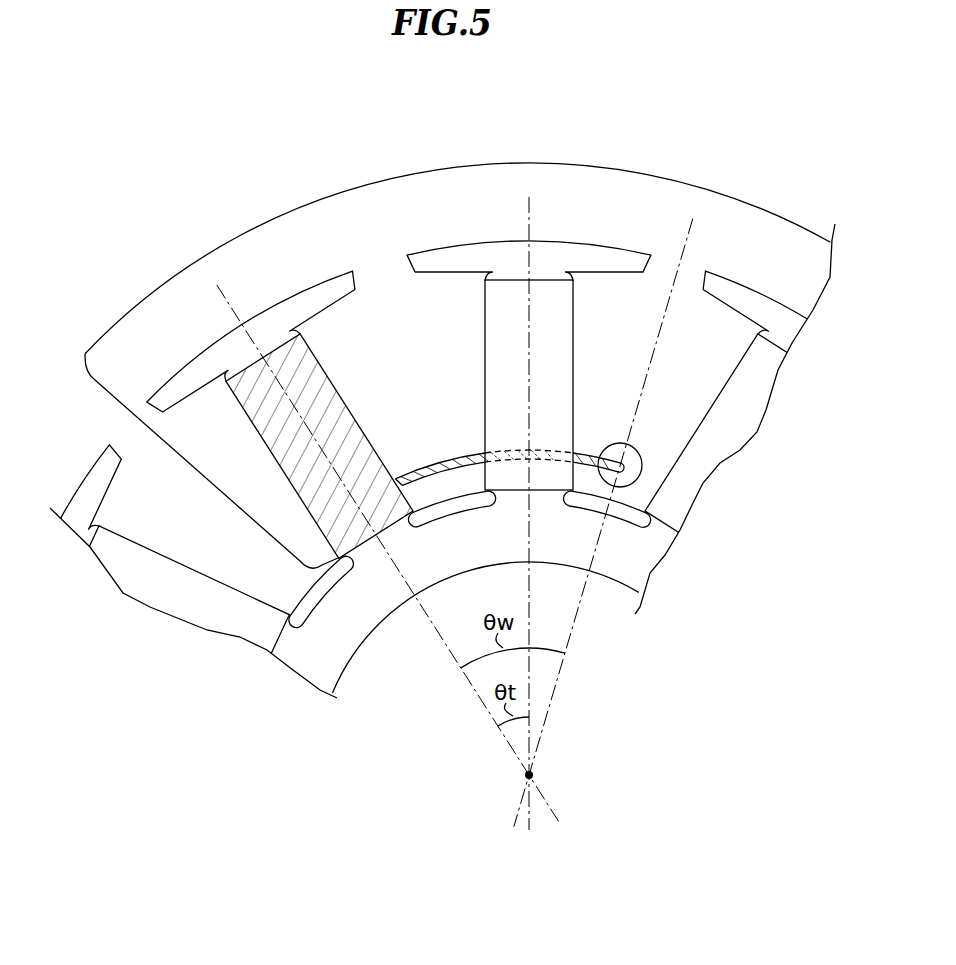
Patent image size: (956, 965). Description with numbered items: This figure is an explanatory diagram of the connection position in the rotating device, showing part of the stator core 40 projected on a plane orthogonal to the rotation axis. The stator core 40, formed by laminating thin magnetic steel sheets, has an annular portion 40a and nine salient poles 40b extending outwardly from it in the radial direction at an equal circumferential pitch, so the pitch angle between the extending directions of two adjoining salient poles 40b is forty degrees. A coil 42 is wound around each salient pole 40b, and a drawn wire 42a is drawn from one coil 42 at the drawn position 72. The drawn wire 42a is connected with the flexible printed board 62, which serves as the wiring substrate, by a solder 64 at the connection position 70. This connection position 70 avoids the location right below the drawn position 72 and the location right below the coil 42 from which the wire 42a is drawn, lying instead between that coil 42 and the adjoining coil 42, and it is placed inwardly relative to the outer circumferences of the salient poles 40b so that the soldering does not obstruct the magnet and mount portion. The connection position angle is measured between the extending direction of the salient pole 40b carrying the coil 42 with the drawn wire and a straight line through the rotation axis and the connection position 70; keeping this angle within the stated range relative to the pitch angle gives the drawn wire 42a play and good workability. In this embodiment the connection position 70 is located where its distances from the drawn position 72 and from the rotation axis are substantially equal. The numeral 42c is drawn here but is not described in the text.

The stator core 40 is at (618, 566).
The annular portion 40a is at (343, 645).
The salient pole 40b is at (603, 255).
The coil 42 is at (565, 308).
The drawn wire 42a is at (410, 465).
The thin wall portion of magnet insertion hole 42c is at (437, 463).
The flexible printed board 62 is at (730, 210).
The solder 64 is at (640, 443).
The connection position 70 is at (612, 442).
The drawn position 72 is at (394, 460).